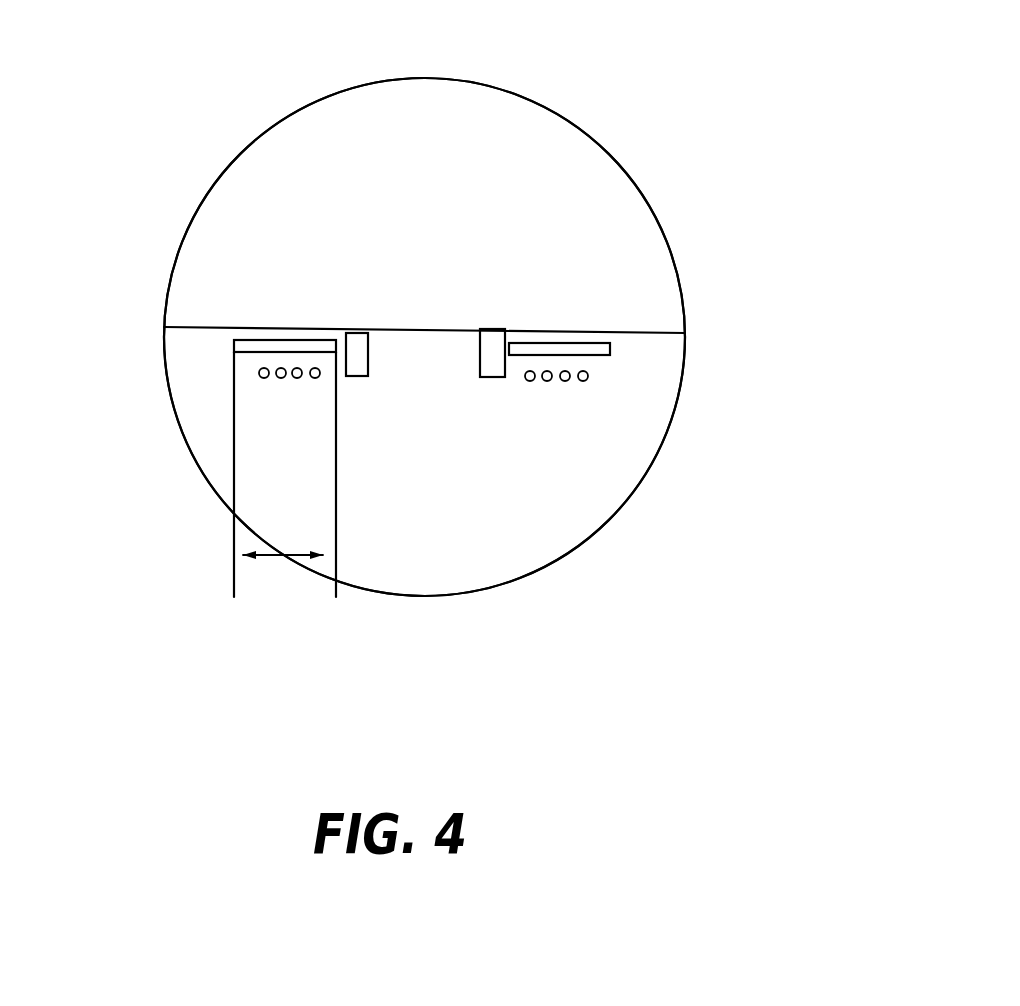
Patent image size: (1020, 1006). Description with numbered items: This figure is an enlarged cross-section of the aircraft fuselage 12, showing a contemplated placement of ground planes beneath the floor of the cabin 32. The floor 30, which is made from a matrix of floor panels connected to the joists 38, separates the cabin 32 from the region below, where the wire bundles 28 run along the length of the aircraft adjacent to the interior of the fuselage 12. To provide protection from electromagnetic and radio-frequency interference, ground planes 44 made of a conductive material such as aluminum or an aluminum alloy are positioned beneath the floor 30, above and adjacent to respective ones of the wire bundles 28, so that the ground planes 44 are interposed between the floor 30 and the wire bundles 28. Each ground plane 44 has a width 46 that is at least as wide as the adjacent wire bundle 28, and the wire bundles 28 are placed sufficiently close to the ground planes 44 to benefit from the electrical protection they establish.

The fuselage 12 is at (673, 258).
The wire bundles 28 is at (296, 379).
The floor 30 is at (404, 327).
The cabin 32 is at (571, 175).
The joists 38 is at (347, 327).
The ground planes 44 is at (234, 350).
The width 46 is at (283, 558).